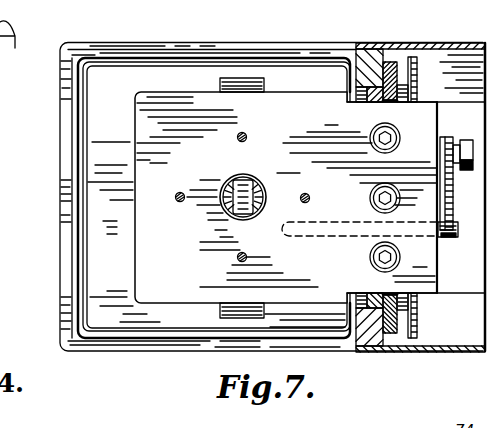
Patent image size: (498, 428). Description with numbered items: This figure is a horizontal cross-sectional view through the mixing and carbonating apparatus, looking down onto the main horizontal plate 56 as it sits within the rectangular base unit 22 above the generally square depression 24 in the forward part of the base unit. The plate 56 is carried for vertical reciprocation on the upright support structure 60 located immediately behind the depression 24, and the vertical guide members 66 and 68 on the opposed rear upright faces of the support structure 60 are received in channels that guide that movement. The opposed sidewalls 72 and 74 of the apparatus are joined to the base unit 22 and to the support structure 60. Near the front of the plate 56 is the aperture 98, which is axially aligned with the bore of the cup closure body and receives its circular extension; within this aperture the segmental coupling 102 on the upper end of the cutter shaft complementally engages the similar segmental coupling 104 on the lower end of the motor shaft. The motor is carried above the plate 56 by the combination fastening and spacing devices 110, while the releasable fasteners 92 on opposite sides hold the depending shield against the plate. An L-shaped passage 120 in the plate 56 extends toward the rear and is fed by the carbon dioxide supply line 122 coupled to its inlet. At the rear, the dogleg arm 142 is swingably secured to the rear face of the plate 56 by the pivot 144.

The base unit 22 is at (60, 255).
The depression 24 is at (115, 322).
The main horizontal plate 56 is at (150, 162).
The support structure 60 is at (373, 48).
The vertical guide member 66 is at (398, 63).
The vertical guide member 68 is at (395, 318).
The sidewall 72 is at (468, 348).
The sidewall 74 is at (462, 44).
The releasable fastener 92 is at (237, 80).
The aperture 98 is at (242, 175).
The segmental coupling 102 is at (267, 183).
The segmental coupling 104 is at (263, 212).
The combination fastening and spacing device 110 is at (238, 256).
The L-shaped passage 120 is at (312, 221).
The carbon dioxide supply line 122 is at (456, 233).
The dogleg arm 142 is at (444, 188).
The pivot 144 is at (466, 140).